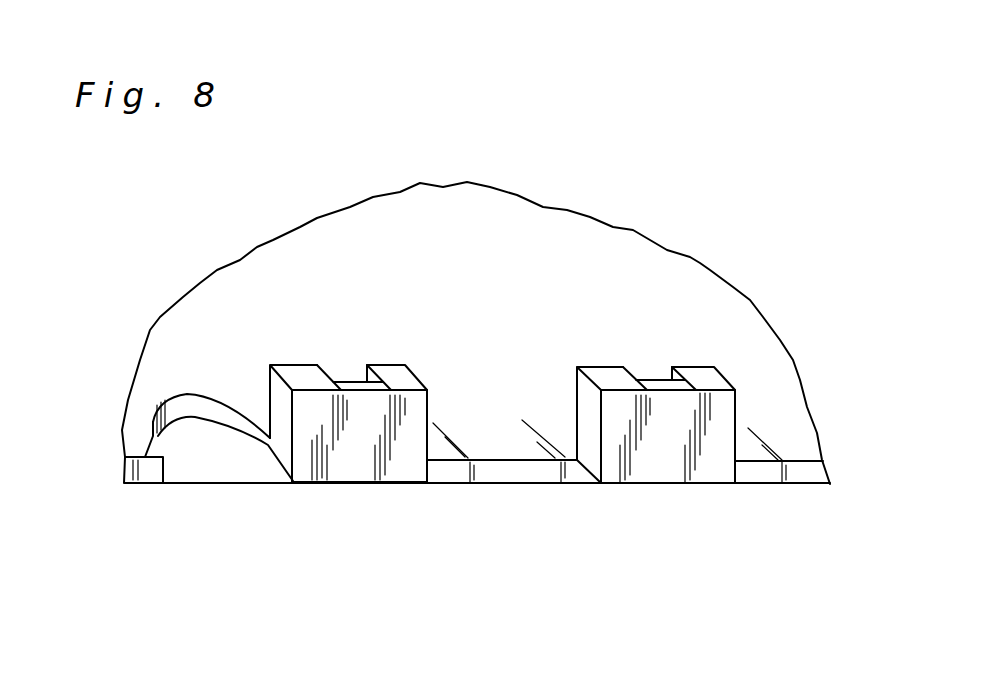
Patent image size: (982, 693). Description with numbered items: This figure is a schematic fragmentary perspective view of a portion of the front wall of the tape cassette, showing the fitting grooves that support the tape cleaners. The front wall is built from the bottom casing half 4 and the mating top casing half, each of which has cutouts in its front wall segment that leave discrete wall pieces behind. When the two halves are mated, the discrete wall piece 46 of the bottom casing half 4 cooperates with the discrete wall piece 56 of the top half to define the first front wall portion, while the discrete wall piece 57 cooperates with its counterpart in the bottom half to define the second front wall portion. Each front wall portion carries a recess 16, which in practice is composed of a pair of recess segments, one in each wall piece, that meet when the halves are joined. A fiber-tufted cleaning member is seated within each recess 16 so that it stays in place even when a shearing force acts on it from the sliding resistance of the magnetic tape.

The bottom casing half 4 is at (672, 303).
The recess 16 is at (522, 456).
The discrete wall piece 46 is at (350, 455).
The discrete wall piece 56 is at (522, 483).
The discrete wall piece 57 is at (667, 465).